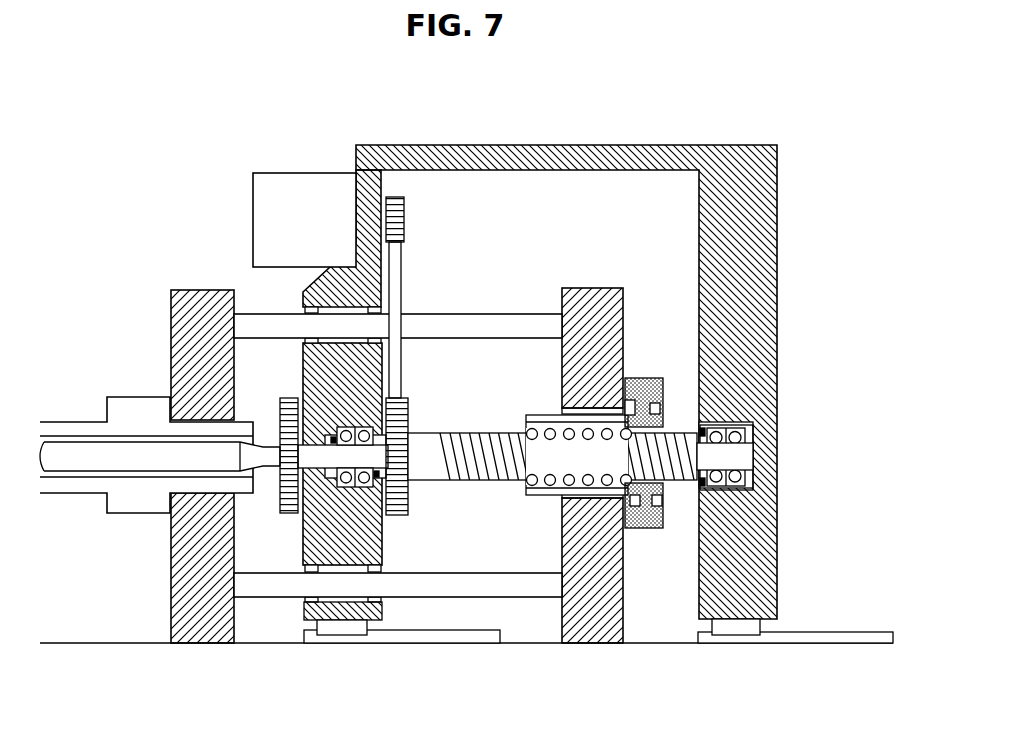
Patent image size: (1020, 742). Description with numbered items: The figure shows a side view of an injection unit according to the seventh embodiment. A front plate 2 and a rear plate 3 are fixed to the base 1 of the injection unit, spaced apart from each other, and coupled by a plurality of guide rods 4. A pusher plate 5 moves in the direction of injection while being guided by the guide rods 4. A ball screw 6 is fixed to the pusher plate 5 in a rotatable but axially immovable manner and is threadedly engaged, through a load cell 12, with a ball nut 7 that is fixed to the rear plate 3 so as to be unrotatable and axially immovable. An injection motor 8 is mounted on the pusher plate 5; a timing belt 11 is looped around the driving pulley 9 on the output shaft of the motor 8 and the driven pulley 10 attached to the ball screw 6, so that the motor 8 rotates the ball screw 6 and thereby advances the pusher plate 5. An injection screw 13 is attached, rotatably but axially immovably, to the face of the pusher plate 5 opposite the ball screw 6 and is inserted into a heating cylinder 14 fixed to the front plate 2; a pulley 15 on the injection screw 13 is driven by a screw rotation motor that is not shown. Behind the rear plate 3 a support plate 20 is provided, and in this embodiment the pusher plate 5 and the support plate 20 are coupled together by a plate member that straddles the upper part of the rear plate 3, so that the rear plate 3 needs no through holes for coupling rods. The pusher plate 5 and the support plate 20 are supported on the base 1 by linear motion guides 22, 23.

The base 1 is at (90, 643).
The front plate 2 is at (172, 568).
The rear plate 3 is at (581, 290).
The guide rods 4 is at (480, 315).
The pusher plate 5 is at (372, 285).
The ball screw 6 is at (480, 433).
The ball nut 7 is at (525, 493).
The injection motor 8 is at (276, 172).
The driving pulley 9 is at (405, 215).
The driven pulley 10 is at (408, 510).
The timing belt 11 is at (404, 380).
The load cell 12 is at (652, 372).
The injection screw 13 is at (135, 443).
The heating cylinder 14 is at (78, 422).
The pulley 15 is at (290, 398).
The support plate 20 is at (775, 530).
The linear motion guide 22 is at (340, 635).
The linear motion guide 23 is at (727, 635).